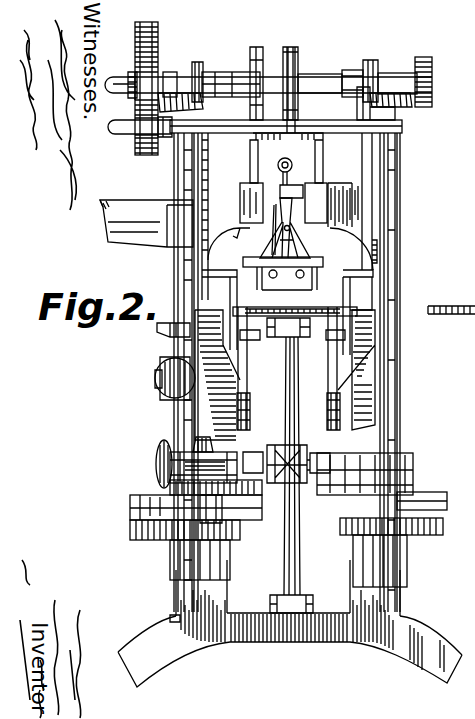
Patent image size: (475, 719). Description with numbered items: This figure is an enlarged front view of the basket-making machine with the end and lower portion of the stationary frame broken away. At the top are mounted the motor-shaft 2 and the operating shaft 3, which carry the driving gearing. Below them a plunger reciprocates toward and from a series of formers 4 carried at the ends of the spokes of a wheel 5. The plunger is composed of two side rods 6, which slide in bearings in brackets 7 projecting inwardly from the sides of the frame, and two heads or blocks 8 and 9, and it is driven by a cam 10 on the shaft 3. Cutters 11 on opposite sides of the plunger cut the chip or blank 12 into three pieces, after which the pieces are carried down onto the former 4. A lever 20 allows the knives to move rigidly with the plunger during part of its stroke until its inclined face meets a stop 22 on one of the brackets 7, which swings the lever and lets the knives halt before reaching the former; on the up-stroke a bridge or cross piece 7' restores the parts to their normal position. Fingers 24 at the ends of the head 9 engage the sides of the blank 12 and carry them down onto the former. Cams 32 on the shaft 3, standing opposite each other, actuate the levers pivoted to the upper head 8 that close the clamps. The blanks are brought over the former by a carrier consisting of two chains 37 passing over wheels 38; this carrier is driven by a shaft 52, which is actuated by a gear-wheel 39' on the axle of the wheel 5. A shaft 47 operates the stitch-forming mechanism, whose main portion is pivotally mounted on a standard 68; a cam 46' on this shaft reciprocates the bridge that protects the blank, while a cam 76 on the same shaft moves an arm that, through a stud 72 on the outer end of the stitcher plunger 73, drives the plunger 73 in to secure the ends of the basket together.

The motor-shaft 2 is at (137, 88).
The operating shaft 3 is at (268, 83).
The former 4 is at (277, 485).
The wheel 5 is at (280, 397).
The side rod 6 is at (282, 158).
The bracket 7 is at (287, 196).
The bridge or cross piece 7' is at (276, 171).
The upper head 8 is at (356, 114).
The head 9 is at (324, 260).
The cam 10 is at (240, 68).
The cutter 11 is at (295, 303).
The blank 12 is at (318, 307).
The lever 20 is at (296, 235).
The stop 22 is at (247, 236).
The finger 24 is at (286, 278).
The cam 32 is at (310, 99).
The chain 37 is at (329, 384).
The wheel 38 is at (292, 353).
The gear-wheel 39' is at (203, 462).
The cam 46' is at (167, 321).
The shaft 47 is at (414, 567).
The shaft 52 is at (175, 380).
The standard 68 is at (356, 556).
The stud 72 is at (446, 500).
The plunger 73 is at (283, 488).
The cam 76 is at (289, 531).